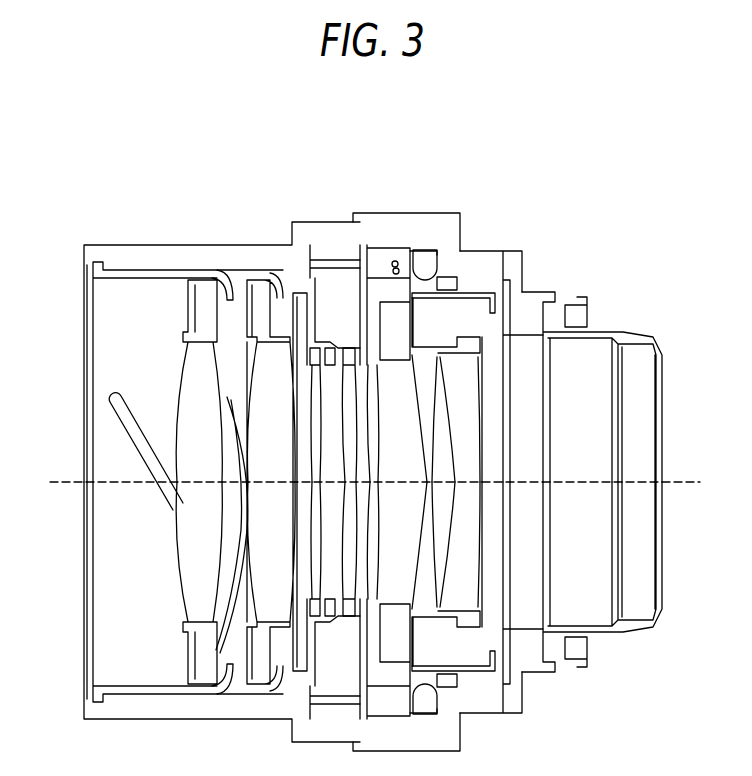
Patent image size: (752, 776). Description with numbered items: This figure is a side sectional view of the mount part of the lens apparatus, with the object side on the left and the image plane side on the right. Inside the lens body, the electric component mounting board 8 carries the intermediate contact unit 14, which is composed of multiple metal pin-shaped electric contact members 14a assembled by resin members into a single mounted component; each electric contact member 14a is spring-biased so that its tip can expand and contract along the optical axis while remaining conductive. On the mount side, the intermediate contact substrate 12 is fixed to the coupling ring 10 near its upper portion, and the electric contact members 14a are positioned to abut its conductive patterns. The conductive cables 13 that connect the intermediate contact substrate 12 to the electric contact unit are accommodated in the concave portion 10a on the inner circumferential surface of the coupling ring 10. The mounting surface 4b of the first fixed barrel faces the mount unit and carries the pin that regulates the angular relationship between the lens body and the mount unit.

The electric component mounting board 8 is at (360, 290).
The intermediate contact unit 14 is at (393, 267).
The electric contact member 14a is at (395, 261).
The intermediate contact substrate 12 is at (425, 252).
The concave portion 10a is at (473, 270).
The conductive cables 13 is at (495, 256).
The coupling ring 10 is at (528, 305).
The mounting surface 4b is at (413, 688).